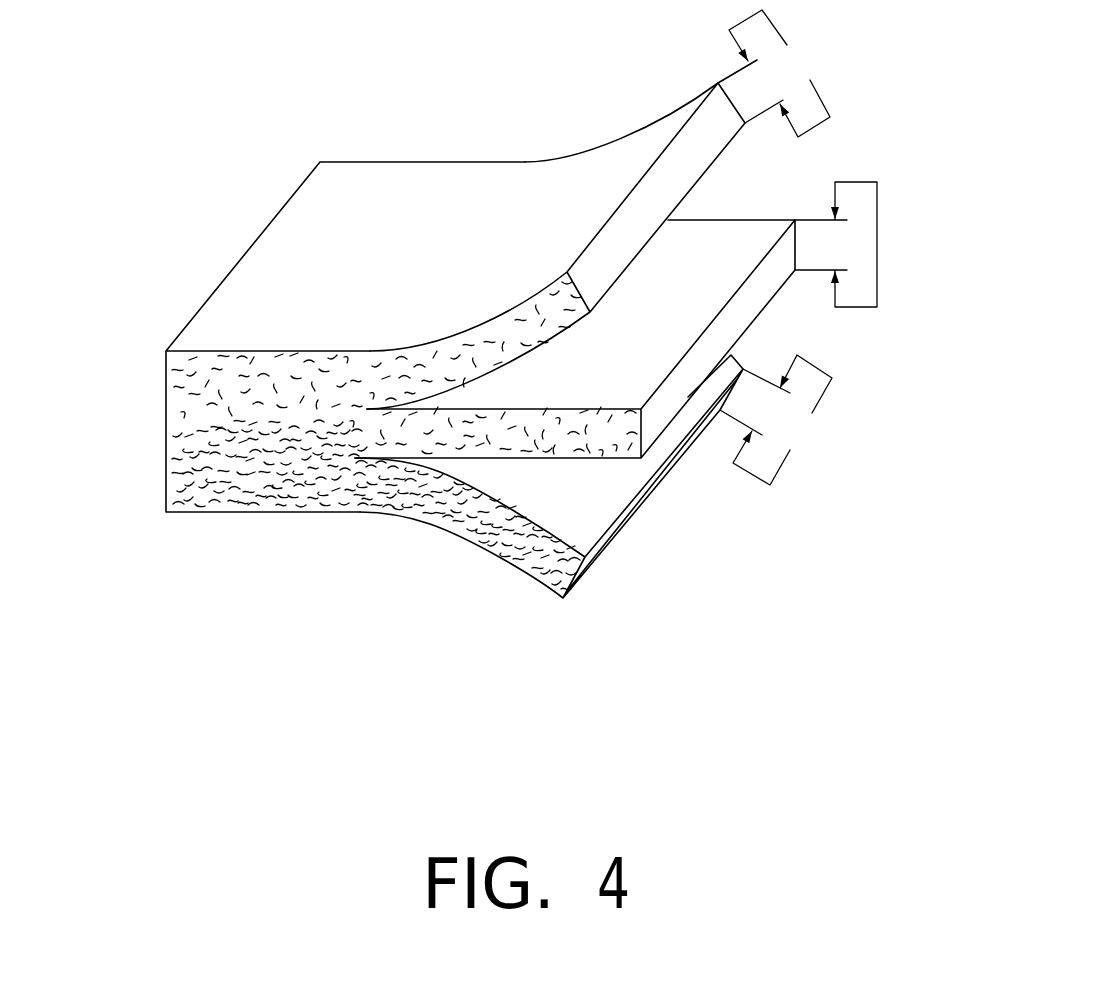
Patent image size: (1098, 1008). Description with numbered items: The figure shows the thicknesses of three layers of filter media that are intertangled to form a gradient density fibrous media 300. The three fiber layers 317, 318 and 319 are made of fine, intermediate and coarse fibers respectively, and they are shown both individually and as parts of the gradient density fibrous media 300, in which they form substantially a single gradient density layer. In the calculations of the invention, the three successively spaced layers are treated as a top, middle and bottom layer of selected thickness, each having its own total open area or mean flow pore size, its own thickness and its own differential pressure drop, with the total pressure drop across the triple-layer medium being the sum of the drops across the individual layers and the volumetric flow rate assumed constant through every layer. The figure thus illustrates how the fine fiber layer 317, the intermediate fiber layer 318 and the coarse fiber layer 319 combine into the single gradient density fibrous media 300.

The gradient density fibrous media 300 is at (624, 331).
The fiber layer 317 is at (605, 538).
The fiber layer 318 is at (737, 317).
The fiber layer 319 is at (671, 176).